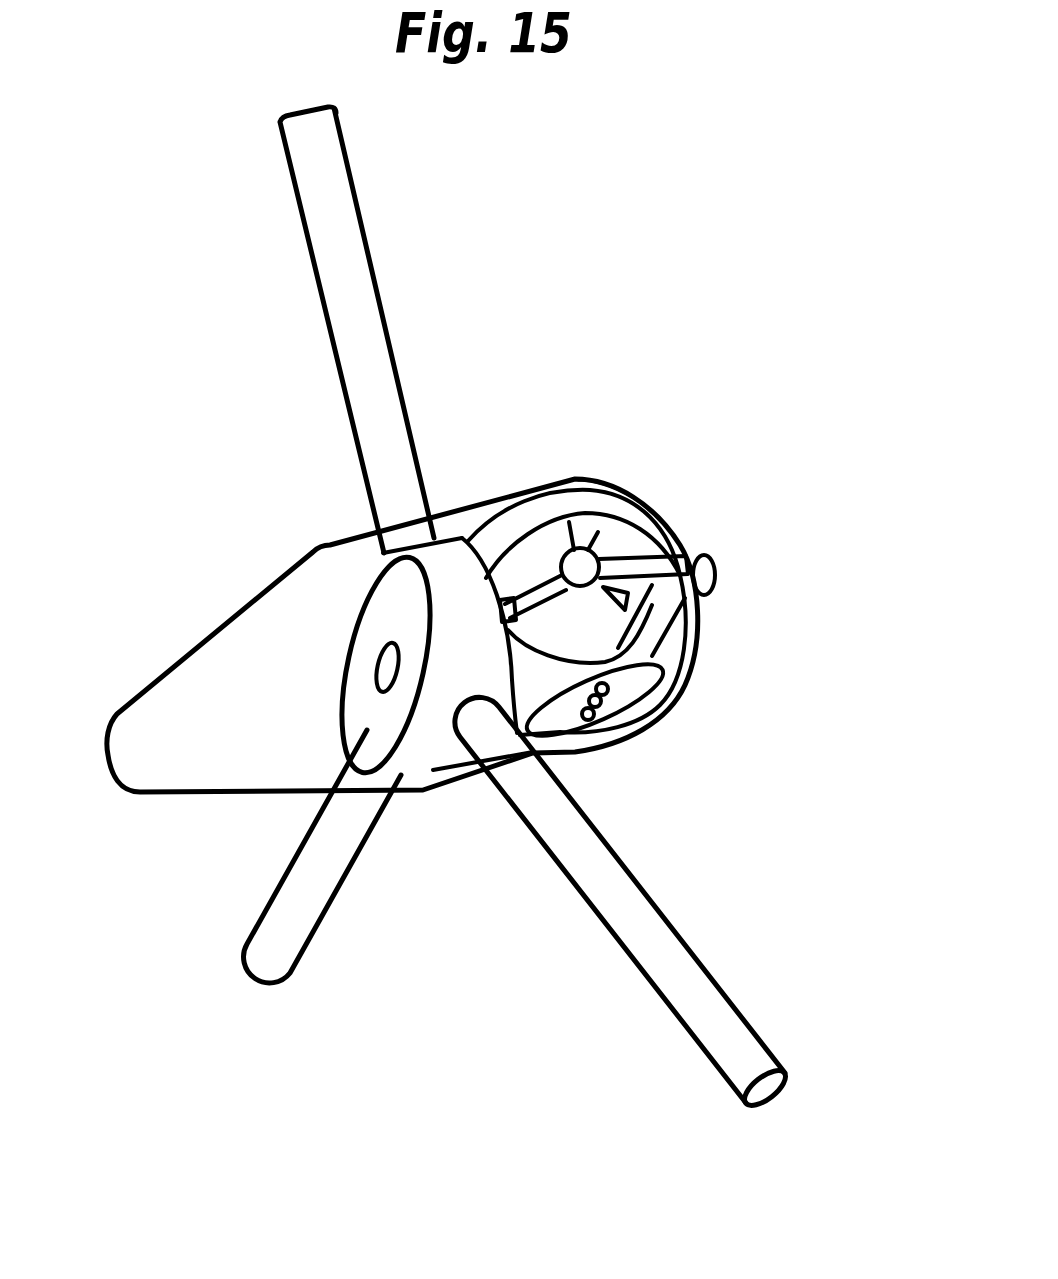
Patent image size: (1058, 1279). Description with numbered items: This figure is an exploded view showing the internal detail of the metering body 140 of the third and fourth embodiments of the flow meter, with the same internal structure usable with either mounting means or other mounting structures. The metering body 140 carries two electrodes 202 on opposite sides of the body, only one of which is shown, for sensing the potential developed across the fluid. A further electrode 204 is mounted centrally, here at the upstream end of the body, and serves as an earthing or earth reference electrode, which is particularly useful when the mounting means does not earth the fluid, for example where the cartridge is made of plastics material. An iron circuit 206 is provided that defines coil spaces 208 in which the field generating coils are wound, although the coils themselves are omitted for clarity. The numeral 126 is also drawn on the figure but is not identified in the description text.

The metering body 140 is at (183, 638).
The leg tube 126 is at (370, 260).
The iron circuit 206 is at (586, 476).
The electrodes 202 is at (600, 524).
The coil spaces 208 is at (683, 536).
The further electrode 204 is at (737, 580).